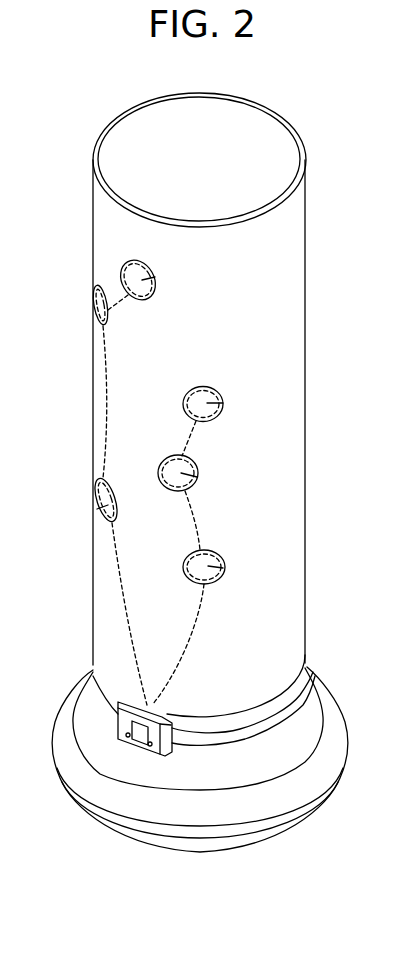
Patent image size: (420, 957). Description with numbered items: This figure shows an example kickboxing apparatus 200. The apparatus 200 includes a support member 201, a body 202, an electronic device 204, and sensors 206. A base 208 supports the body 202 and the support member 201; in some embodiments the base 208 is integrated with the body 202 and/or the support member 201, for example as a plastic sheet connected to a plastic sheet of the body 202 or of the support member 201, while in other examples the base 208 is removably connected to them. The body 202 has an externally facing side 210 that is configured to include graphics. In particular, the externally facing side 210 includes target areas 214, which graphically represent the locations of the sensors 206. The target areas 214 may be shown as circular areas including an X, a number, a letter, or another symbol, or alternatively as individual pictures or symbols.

The kickboxing apparatus 200 is at (284, 80).
The support member 201 is at (130, 143).
The body 202 is at (306, 236).
The electronic device 204 is at (92, 676).
The sensors 206 is at (156, 276).
The base 208 is at (118, 838).
The externally facing side 210 is at (252, 308).
The target areas 214 is at (120, 272).